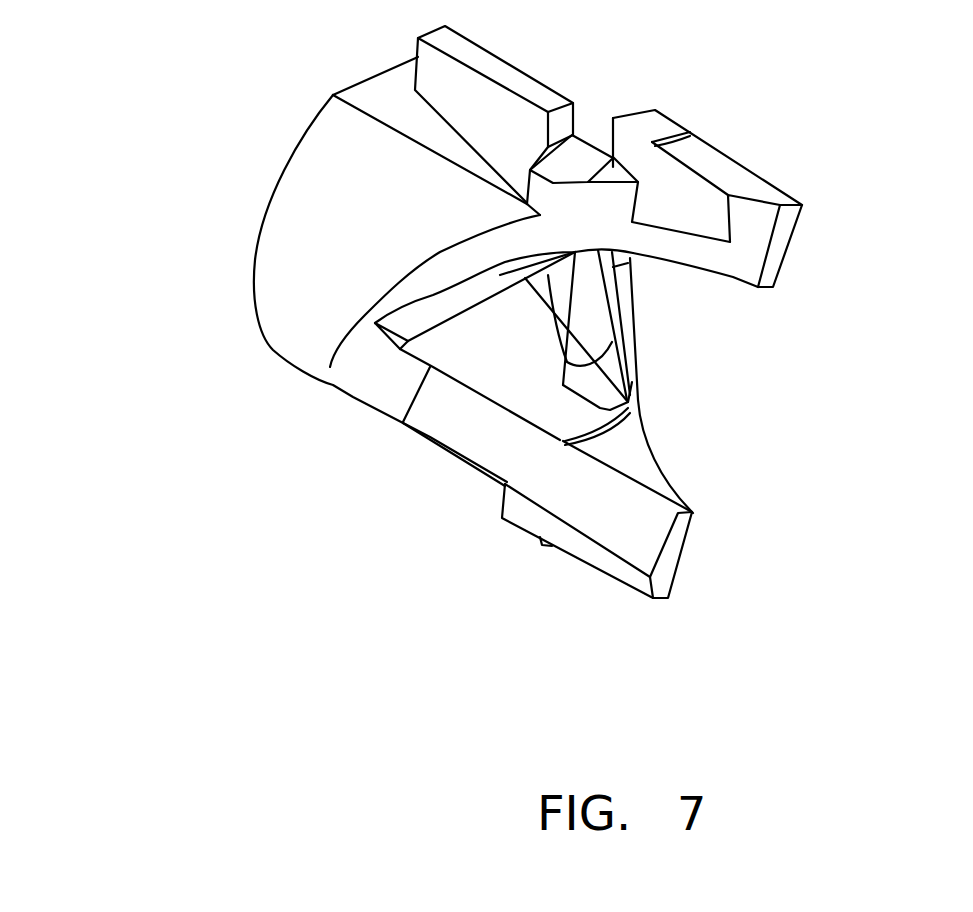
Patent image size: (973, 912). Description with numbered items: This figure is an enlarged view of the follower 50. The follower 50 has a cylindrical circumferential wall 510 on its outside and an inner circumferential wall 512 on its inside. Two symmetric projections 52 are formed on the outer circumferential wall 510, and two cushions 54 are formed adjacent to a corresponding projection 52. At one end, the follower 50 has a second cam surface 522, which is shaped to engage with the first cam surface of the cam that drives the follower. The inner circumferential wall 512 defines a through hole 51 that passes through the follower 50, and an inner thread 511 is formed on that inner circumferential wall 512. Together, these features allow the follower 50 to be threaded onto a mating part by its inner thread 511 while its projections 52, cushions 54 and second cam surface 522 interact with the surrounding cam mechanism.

The follower 50 is at (210, 110).
The through hole 51 is at (473, 330).
The cylindrical circumferential wall 510 is at (318, 262).
The inner thread 511 is at (603, 360).
The inner circumferential wall 512 is at (607, 297).
The projection 52 is at (508, 75).
The second cam surface 522 is at (753, 232).
The cushion 54 is at (570, 163).